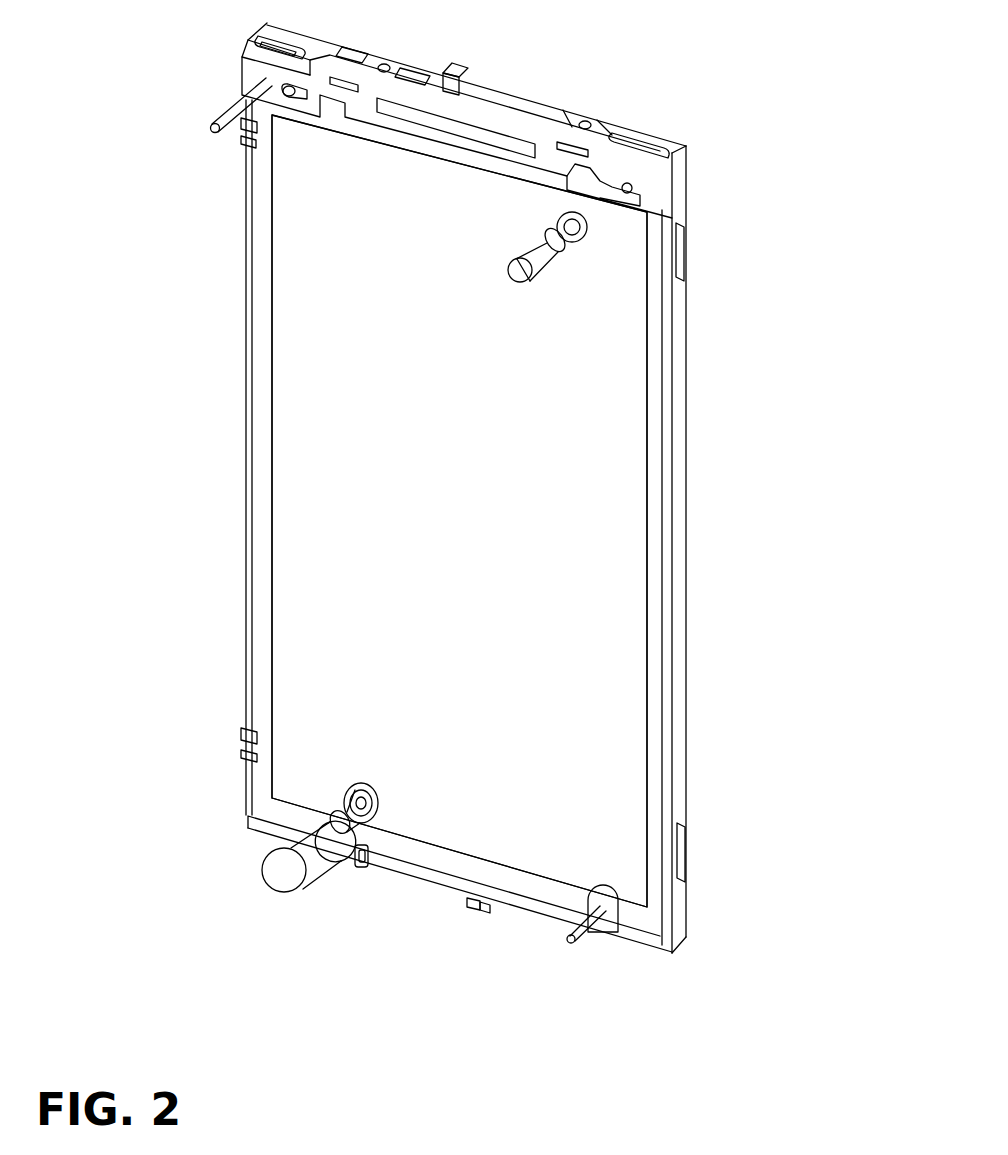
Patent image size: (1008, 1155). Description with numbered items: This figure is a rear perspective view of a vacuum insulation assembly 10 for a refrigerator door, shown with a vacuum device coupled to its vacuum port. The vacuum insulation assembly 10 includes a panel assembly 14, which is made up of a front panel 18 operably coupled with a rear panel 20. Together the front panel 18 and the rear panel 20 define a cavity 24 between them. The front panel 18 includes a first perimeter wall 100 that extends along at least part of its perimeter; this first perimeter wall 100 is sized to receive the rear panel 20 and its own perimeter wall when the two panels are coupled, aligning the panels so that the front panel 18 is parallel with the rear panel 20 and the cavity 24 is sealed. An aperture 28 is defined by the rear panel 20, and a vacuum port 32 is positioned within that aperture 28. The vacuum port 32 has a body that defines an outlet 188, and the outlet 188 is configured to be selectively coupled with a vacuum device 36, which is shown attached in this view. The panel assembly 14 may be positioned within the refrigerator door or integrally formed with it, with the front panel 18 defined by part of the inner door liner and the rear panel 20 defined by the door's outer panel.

The vacuum insulation assembly 10 is at (724, 57).
The panel assembly 14 is at (228, 294).
The front panel 18 is at (676, 547).
The rear panel 20 is at (372, 447).
The cavity 24 is at (567, 421).
The aperture 28 is at (357, 782).
The vacuum port 32 is at (388, 828).
The vacuum device 36 is at (283, 867).
The first perimeter wall 100 is at (680, 740).
The outlet 188 is at (247, 810).